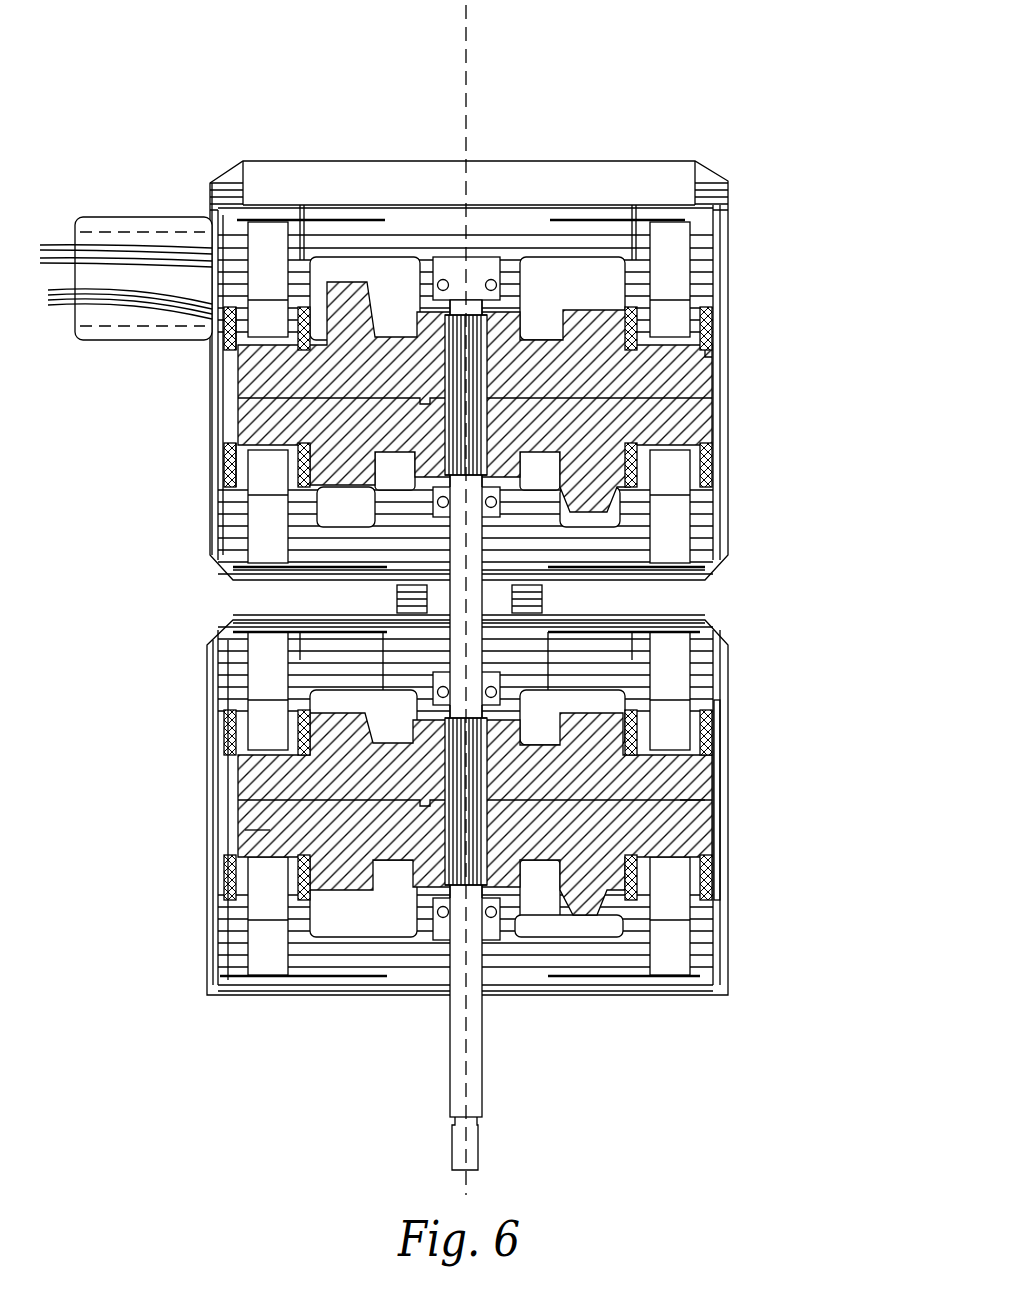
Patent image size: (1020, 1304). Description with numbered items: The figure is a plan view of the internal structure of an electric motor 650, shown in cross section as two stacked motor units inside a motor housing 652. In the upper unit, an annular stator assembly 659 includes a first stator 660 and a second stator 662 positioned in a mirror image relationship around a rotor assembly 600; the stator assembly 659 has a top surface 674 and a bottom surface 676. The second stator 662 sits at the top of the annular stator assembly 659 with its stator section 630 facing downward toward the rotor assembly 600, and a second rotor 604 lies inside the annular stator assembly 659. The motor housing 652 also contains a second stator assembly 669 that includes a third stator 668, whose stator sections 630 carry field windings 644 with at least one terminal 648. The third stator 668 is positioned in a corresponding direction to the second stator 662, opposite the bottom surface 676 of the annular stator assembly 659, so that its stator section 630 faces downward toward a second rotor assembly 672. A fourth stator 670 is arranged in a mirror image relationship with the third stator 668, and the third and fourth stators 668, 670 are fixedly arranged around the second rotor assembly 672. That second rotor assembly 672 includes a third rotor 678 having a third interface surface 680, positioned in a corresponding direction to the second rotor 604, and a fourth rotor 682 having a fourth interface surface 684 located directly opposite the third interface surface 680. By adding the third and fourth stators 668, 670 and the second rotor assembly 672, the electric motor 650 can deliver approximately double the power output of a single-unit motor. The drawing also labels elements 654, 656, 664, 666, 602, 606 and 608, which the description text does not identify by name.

The electric motor 650 is at (240, 45).
The motor housing 652 is at (213, 185).
The axis 654 is at (470, 130).
The shaft 656 is at (483, 1052).
The annular stator assembly 659 is at (768, 203).
The first stator 660 is at (660, 568).
The second stator 662 is at (655, 212).
The stator 664 is at (195, 528).
The first motor 666 is at (800, 292).
The third stator 668 is at (700, 662).
The second stator assembly 669 is at (795, 684).
The fourth stator 670 is at (700, 980).
The second rotor assembly 672 is at (742, 748).
The top surface 674 is at (535, 195).
The bottom surface 676 is at (660, 590).
The third rotor 678 is at (240, 800).
The third interface surface 680 is at (255, 775).
The fourth rotor 682 is at (262, 830).
The fourth interface surface 684 is at (690, 800).
The rotor assembly 600 is at (690, 410).
The rotor portion 602 is at (700, 408).
The second rotor 604 is at (260, 375).
The magnet 606 is at (230, 410).
The rotor portion 608 is at (712, 363).
The stator sections 630 is at (255, 432).
The field windings 644 is at (238, 684).
The terminal 648 is at (235, 660).